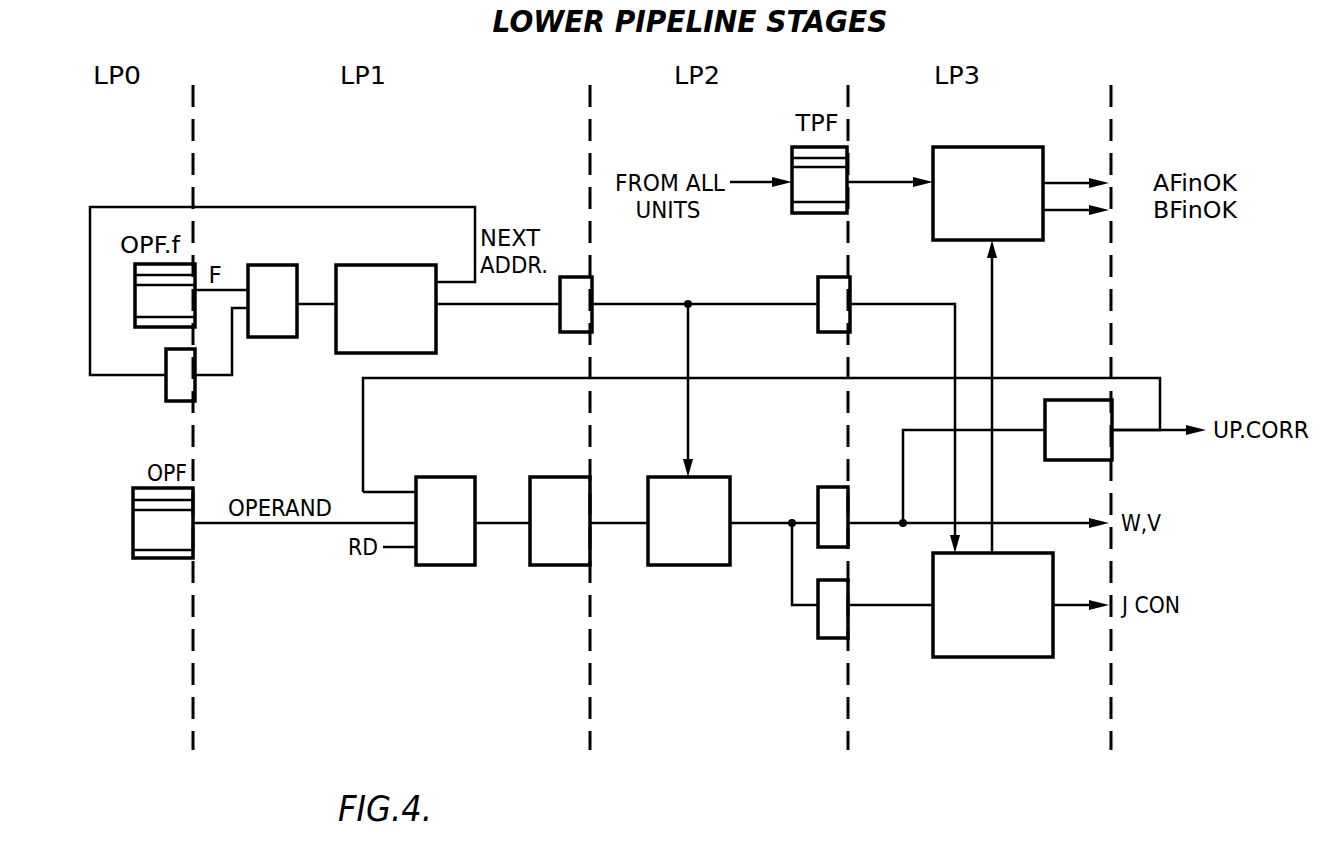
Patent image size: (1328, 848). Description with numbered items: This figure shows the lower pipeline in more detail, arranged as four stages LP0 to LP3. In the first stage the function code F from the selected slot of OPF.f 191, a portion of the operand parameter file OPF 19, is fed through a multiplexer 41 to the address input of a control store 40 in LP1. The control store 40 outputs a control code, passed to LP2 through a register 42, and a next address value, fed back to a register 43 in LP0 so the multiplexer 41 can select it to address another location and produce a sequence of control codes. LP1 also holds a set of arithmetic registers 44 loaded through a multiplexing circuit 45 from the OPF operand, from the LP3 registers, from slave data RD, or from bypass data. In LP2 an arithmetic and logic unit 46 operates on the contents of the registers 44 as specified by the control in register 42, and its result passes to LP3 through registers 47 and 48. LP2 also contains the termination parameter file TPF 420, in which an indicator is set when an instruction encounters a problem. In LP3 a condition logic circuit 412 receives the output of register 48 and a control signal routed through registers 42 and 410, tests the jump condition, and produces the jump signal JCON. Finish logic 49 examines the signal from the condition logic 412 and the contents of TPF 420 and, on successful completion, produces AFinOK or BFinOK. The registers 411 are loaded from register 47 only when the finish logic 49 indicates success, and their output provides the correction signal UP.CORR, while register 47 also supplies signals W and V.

The operand parameter file OPF 19 is at (150, 560).
The OPF.f portion of operand parameter file 191 is at (160, 327).
The control store 40 is at (424, 265).
The multiplexer 41 is at (286, 265).
The register 42 is at (596, 296).
The register 43 is at (168, 388).
The arithmetic registers 44 is at (552, 565).
The multiplexing circuit 45 is at (446, 565).
The arithmetic and logic unit (ALU) 46 is at (692, 565).
The register 47 is at (822, 503).
The register 48 is at (828, 638).
The finish logic 49 is at (1025, 240).
The register 410 is at (818, 285).
The registers 411 is at (1063, 460).
The condition logic circuit 412 is at (995, 657).
The termination parameter file TPF 420 is at (792, 157).